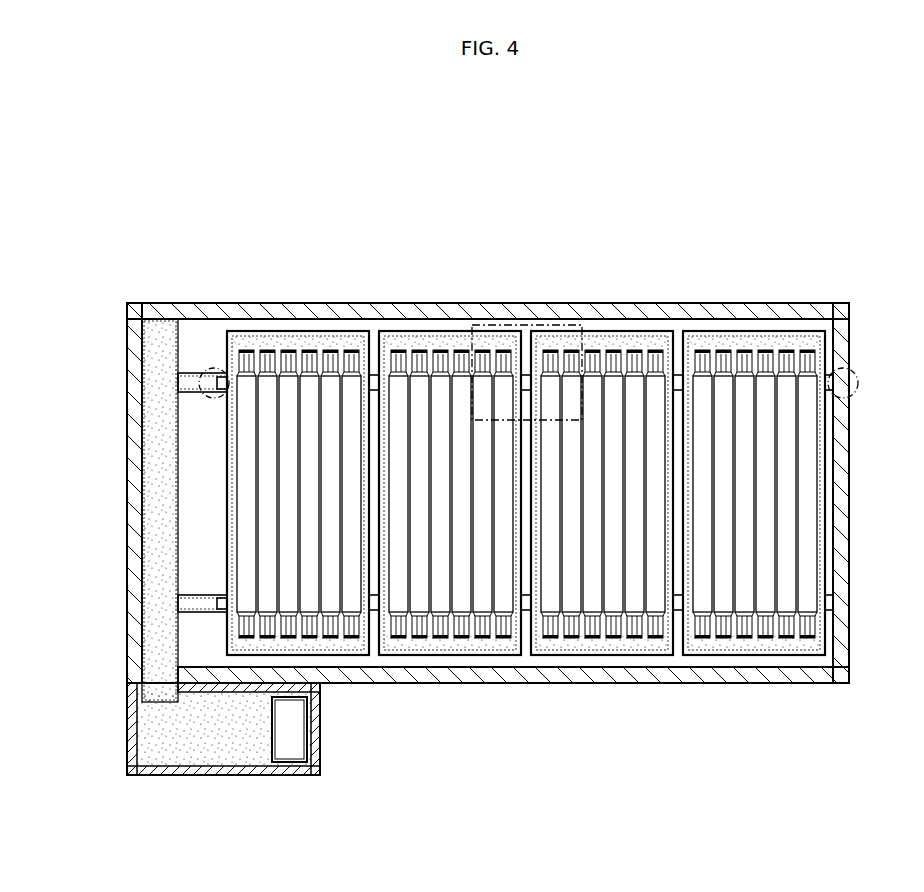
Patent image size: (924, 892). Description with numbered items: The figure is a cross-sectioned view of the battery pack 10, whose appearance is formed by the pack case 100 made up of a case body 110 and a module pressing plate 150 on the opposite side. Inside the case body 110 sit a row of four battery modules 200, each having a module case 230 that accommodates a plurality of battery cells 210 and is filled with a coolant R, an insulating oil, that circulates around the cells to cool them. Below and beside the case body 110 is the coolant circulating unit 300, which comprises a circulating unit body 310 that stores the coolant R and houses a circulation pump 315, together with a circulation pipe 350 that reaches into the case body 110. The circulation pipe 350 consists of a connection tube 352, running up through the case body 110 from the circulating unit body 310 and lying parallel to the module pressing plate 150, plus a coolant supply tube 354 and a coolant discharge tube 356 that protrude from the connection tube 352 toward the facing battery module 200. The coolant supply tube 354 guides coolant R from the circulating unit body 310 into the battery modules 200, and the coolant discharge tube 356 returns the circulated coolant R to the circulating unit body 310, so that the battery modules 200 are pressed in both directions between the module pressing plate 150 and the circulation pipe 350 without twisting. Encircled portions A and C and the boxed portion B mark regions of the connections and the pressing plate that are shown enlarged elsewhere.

The battery pack 10 is at (219, 207).
The pack case 100 is at (790, 257).
The case body 110 is at (800, 311).
The module pressing plate 150 is at (845, 311).
The battery module 200 is at (441, 666).
The battery cell 210 is at (445, 350).
The module case 230 is at (625, 653).
The coolant circulating unit 300 is at (213, 828).
The circulating unit body 310 is at (213, 777).
The circulation pump 315 is at (295, 753).
The circulation pipe 350 is at (162, 714).
The connection tube 352 is at (175, 470).
The coolant supply tube 354 is at (191, 373).
The coolant discharge tube 356 is at (191, 595).
The coolant R is at (158, 512).
The detail region A is at (211, 364).
The detail region B is at (563, 318).
The detail region C is at (860, 374).